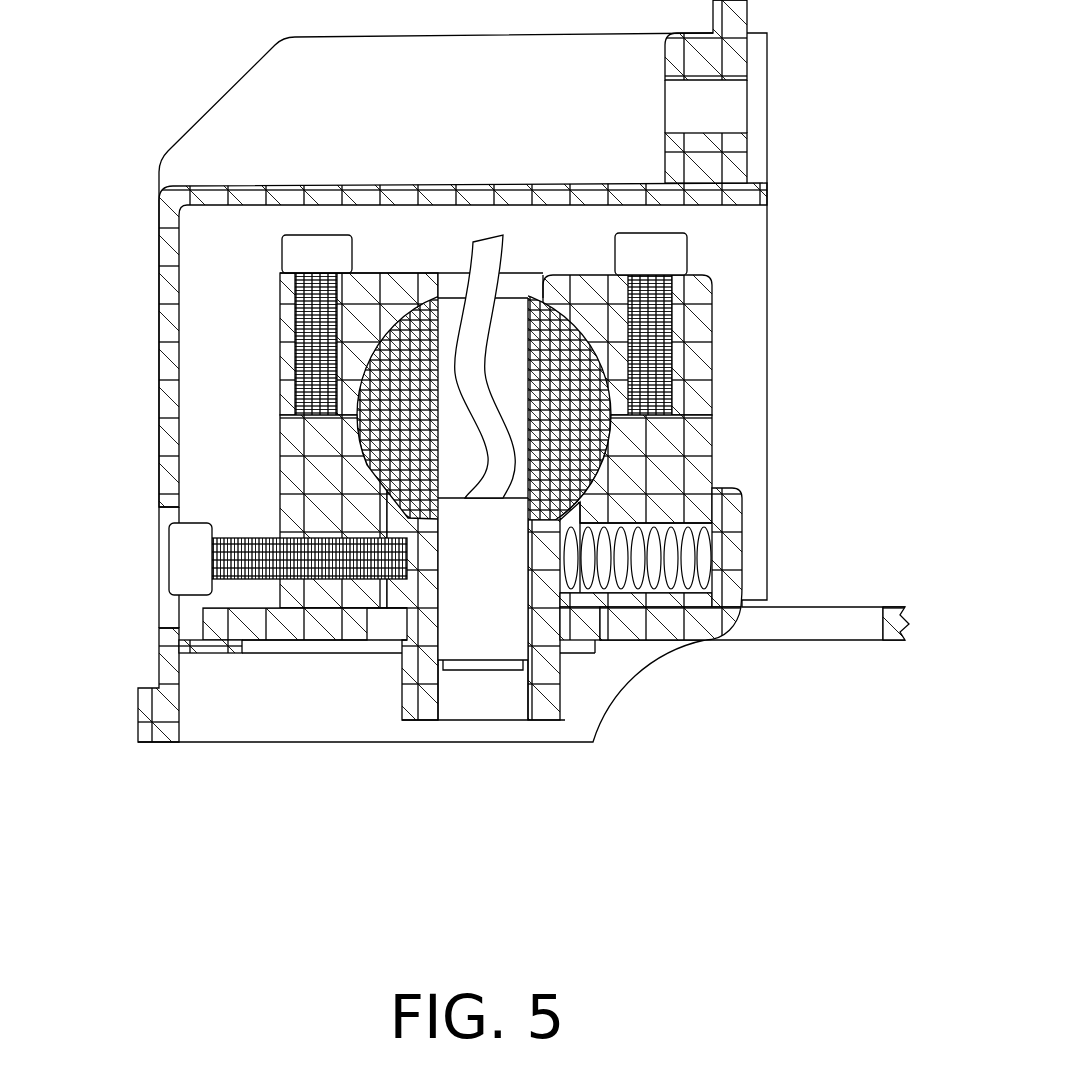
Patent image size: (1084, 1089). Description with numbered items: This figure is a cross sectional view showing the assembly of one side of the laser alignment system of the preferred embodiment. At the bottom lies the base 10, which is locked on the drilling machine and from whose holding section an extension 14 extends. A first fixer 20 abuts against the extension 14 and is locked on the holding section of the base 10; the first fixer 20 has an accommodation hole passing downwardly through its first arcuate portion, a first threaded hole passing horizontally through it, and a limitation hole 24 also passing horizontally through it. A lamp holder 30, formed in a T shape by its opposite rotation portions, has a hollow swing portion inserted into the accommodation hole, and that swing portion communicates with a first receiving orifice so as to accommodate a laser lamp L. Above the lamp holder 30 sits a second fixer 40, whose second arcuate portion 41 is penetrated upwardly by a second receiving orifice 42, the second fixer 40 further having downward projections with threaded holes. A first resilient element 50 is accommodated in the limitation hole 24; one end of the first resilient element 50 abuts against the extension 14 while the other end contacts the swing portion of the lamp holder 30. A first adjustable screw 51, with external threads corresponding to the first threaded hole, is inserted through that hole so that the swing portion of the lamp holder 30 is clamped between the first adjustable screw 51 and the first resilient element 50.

The base 10 is at (853, 643).
The extension 14 is at (744, 522).
The first fixer 20 is at (713, 452).
The limitation hole 24 is at (678, 648).
The lamp holder 30 is at (435, 298).
The second fixer 40 is at (713, 336).
The second arcuate portion 41 is at (596, 300).
The second receiving orifice 42 is at (521, 285).
The first resilient element 50 is at (717, 637).
The first adjustable screw 51 is at (187, 558).
The laser lamp L is at (480, 697).